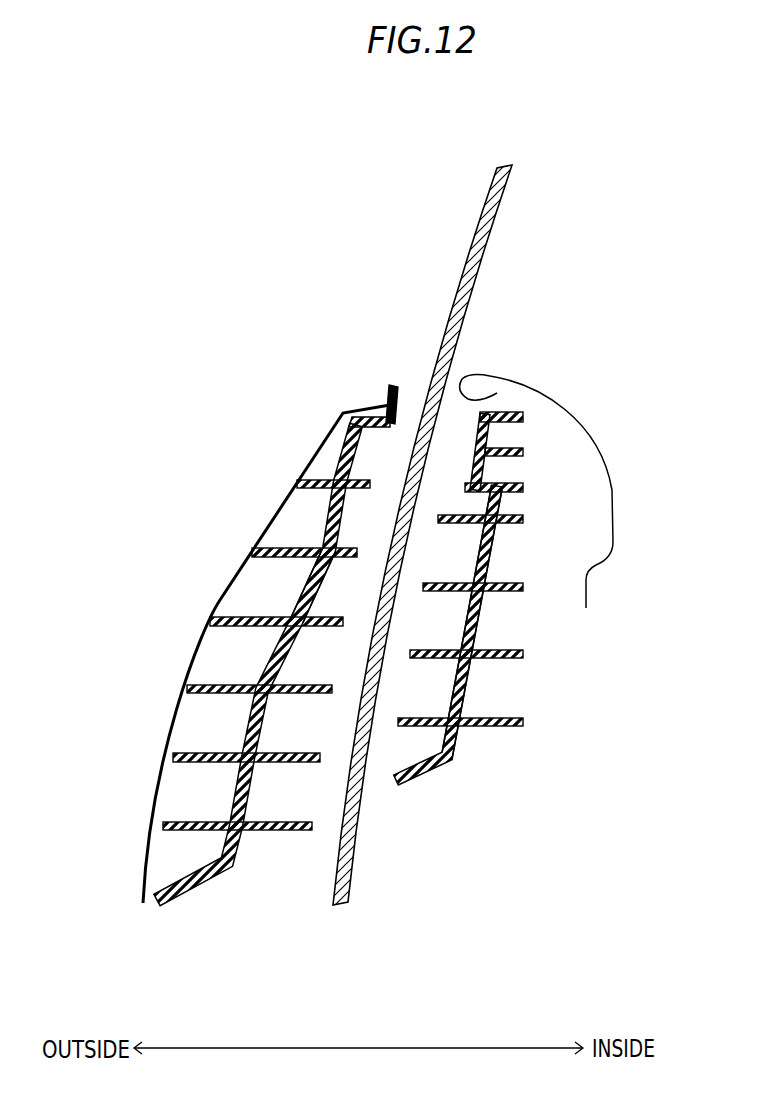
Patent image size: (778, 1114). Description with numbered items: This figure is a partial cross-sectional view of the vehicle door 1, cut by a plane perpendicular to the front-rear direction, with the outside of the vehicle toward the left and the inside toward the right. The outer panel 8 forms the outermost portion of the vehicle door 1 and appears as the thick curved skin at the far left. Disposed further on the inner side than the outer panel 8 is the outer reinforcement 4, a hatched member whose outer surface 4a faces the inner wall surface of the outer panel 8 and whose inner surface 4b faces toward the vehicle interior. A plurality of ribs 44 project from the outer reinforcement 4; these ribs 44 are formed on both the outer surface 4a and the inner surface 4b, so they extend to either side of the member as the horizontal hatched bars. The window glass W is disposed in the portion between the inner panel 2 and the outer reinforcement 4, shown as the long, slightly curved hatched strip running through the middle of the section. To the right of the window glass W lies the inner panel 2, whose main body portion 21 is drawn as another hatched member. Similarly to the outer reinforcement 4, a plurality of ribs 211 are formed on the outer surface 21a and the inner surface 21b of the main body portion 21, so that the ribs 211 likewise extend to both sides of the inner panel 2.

The window glass W is at (498, 207).
The vehicle door 1 is at (283, 375).
The outer panel 8 is at (222, 580).
The outer reinforcement 4 is at (330, 511).
The outer surface 4a is at (299, 601).
The inner surface 4b is at (312, 600).
The ribs 44 is at (278, 558).
The inner panel 2 is at (526, 547).
The main body portion 21 is at (479, 616).
The outer surface 21a is at (476, 568).
The inner surface 21b is at (488, 569).
The ribs 211 is at (450, 524).